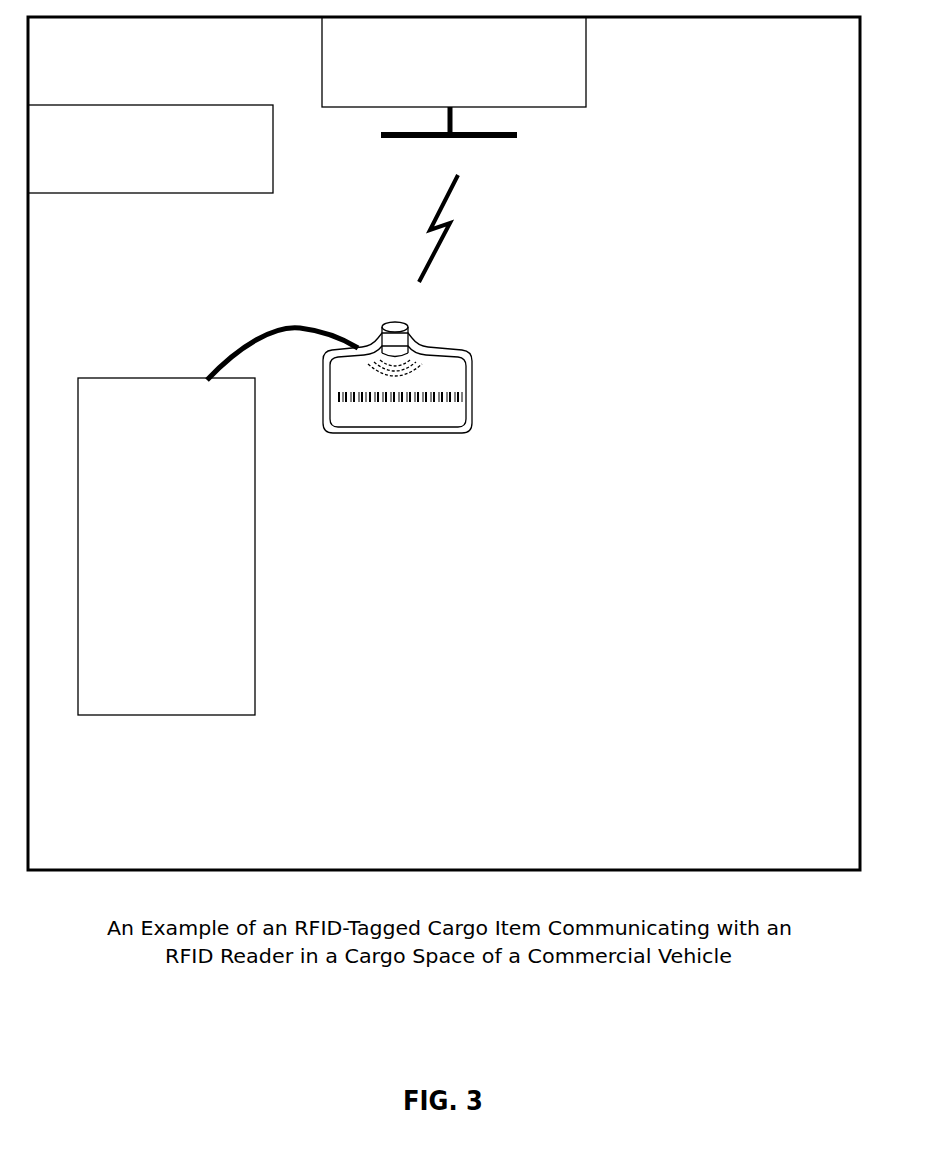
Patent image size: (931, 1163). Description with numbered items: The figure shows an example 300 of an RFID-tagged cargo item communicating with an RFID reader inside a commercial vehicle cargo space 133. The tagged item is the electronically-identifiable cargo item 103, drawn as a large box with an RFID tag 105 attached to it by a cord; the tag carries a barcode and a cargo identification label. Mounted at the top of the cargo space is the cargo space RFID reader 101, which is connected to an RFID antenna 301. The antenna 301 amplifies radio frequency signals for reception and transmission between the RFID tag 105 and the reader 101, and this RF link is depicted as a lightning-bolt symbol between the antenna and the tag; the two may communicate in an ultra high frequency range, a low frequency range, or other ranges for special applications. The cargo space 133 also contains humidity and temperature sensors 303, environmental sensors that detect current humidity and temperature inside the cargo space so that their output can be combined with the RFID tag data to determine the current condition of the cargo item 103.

The cargo space RFID reader 101 is at (454, 62).
The electronically-identifiable cargo item 103 is at (262, 568).
The RFID tag 105 is at (487, 369).
The commercial vehicle cargo space 133 is at (857, 645).
The example of an RFID-tagged cargo item communicating with an RFID reader 300 is at (444, 526).
The RFID antenna 301 is at (523, 157).
The humidity and temperature sensors 303 is at (150, 149).